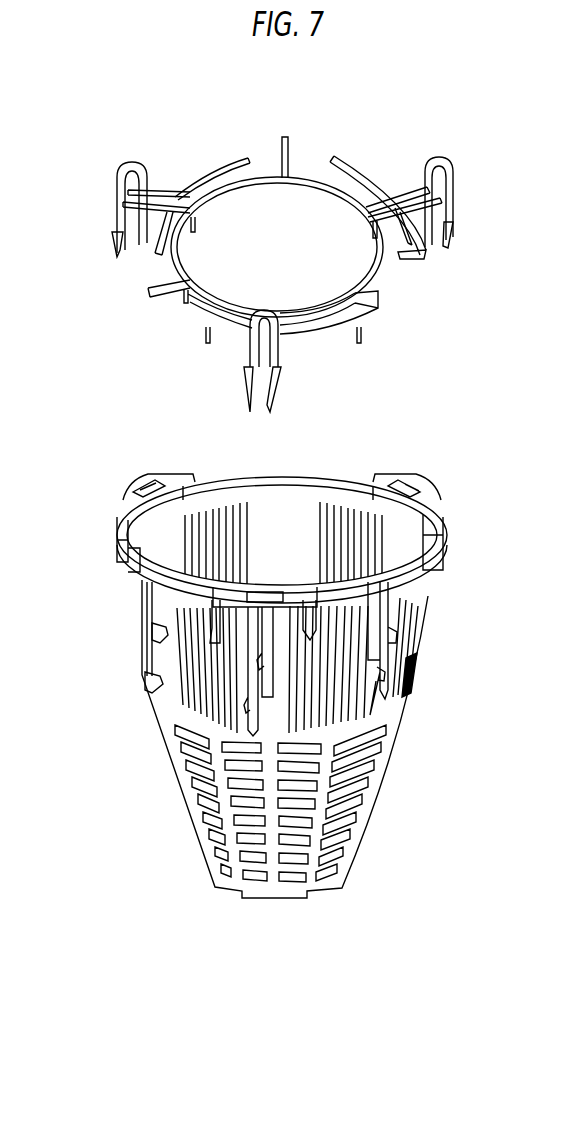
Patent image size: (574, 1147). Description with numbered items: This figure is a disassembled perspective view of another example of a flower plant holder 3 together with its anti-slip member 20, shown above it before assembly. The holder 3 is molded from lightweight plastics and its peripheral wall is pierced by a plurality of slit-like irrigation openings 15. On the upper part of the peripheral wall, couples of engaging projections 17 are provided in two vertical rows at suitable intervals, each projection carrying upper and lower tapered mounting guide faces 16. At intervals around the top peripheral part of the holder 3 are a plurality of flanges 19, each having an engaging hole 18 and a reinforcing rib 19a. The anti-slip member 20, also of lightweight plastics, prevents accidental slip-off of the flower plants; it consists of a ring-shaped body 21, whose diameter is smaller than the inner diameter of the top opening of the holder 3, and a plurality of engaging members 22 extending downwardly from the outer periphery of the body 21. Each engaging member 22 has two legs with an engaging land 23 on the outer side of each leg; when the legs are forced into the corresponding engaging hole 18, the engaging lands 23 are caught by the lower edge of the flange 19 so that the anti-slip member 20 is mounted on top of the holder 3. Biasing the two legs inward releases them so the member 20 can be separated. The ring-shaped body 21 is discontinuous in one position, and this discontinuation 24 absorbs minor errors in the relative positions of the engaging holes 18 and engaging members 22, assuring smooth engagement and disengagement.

The flower plant holder 3 is at (291, 471).
The slit-like irrigation openings 15 is at (413, 613).
The tapered mounting guide faces 16 is at (160, 643).
The engaging projections 17 is at (150, 690).
The engaging hole 18 is at (147, 482).
The flange 19 is at (127, 507).
The reinforcing rib 19a is at (118, 558).
The anti-slip member 20 is at (309, 153).
The ring-shaped body 21 is at (322, 200).
The engaging member 22 is at (120, 190).
The engaging land 23 is at (110, 232).
The discontinuation 24 is at (395, 282).